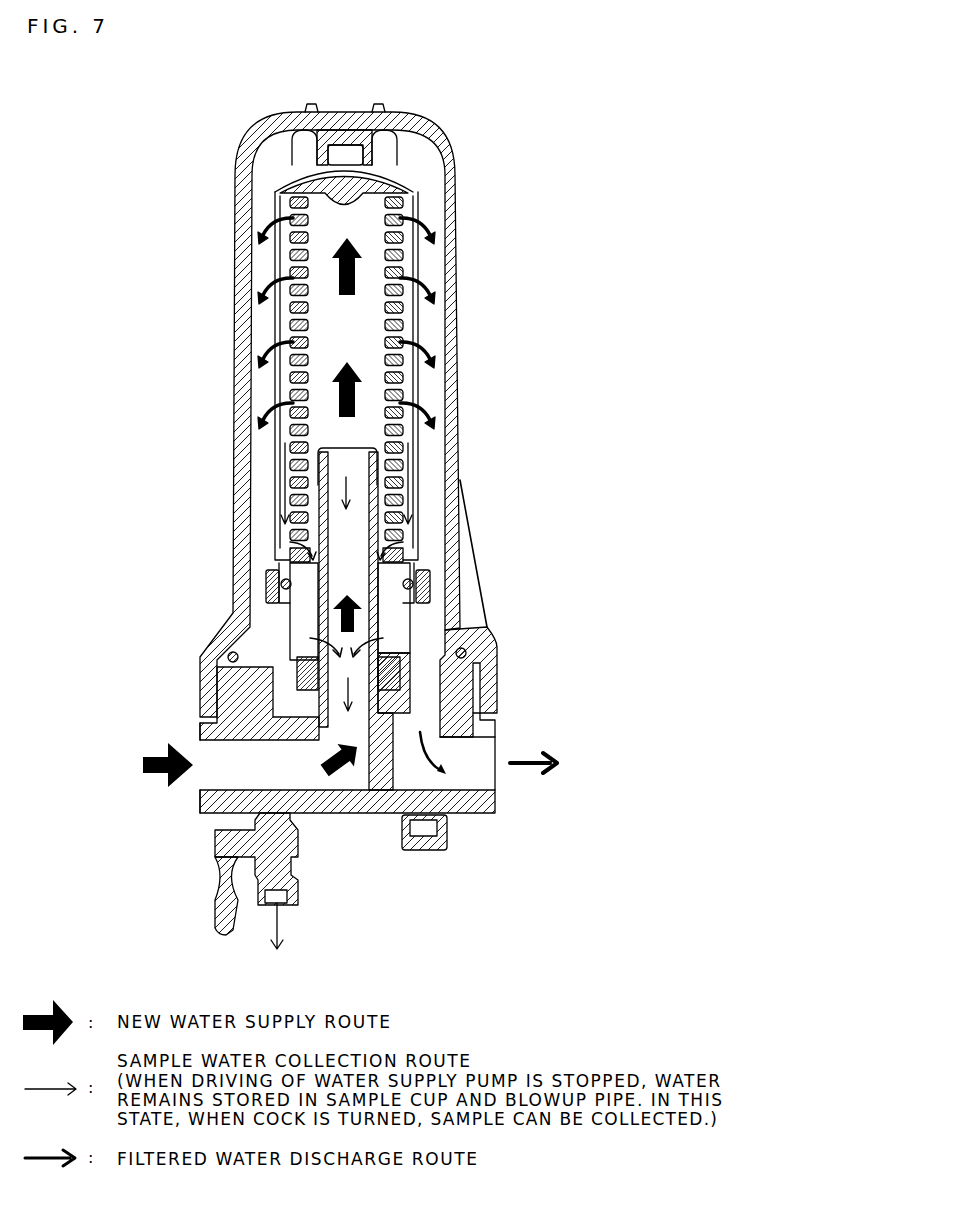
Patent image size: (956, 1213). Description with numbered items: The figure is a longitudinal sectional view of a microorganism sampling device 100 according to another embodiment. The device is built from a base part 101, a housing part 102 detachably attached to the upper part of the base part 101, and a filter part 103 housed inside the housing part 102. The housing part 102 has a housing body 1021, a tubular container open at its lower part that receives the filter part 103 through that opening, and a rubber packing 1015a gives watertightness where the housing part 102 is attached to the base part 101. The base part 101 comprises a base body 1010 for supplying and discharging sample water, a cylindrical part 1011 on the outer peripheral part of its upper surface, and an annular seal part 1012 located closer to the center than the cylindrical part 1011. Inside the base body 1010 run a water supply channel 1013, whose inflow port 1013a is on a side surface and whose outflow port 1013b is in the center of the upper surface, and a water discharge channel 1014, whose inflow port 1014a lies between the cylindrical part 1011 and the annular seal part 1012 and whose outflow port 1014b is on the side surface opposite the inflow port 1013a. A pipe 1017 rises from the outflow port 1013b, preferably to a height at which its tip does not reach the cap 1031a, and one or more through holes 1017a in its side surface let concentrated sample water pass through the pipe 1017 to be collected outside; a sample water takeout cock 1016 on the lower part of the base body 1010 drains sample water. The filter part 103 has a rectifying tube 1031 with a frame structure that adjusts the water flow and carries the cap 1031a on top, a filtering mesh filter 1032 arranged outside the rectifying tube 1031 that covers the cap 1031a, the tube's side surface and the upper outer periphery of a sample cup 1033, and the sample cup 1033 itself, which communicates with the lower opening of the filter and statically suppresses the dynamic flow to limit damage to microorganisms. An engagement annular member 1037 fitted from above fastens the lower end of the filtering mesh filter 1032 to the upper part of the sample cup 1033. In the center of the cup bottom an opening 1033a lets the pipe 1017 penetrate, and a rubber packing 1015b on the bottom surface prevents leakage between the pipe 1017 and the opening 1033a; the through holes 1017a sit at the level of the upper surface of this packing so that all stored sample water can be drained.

The microorganism sampling device 100 is at (145, 89).
The base part 101 is at (375, 804).
The housing part 102 is at (455, 268).
The housing body 1021 is at (458, 455).
The filter part 103 is at (345, 366).
The rectifying tube 1031 is at (257, 366).
The cap 1031a is at (276, 199).
The filtering mesh filter 1032 is at (290, 312).
The sample cup 1033 is at (343, 619).
The opening 1033a is at (300, 665).
The engagement annular member 1037 is at (432, 572).
The pipe 1017 is at (300, 628).
The through holes 1017a is at (415, 632).
The annular seal part 1012 is at (255, 690).
The water supply channel 1013 is at (207, 790).
The inflow port 1013a is at (202, 802).
The outflow port 1013b is at (350, 745).
The cylindrical part 1011 is at (468, 680).
The rubber packing 1015a is at (482, 655).
The rubber packing 1015b is at (488, 703).
The water discharge channel 1014 is at (557, 805).
The inflow port 1014a is at (482, 815).
The outflow port 1014b is at (497, 800).
The base body 1010 is at (498, 815).
The sample water takeout cock 1016 is at (213, 838).